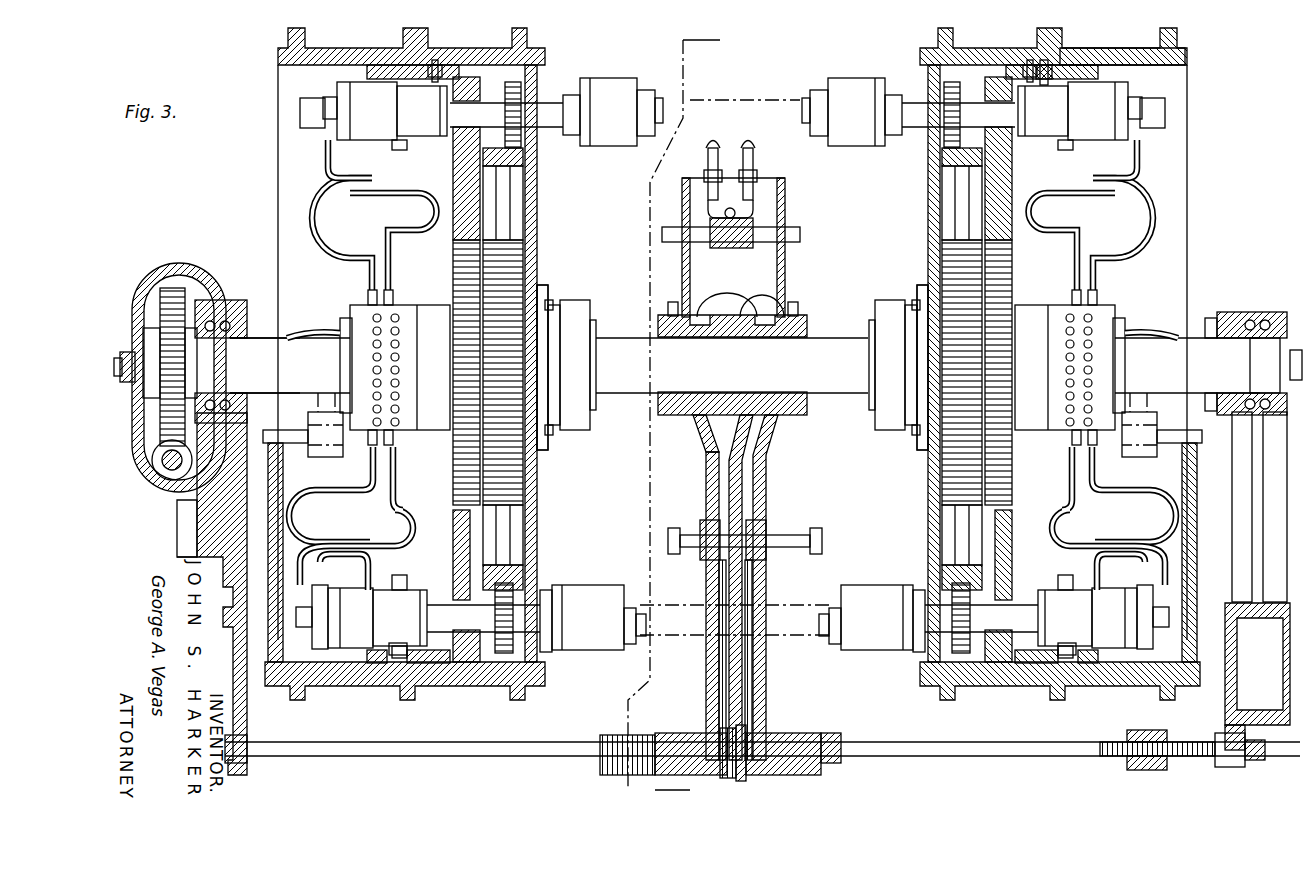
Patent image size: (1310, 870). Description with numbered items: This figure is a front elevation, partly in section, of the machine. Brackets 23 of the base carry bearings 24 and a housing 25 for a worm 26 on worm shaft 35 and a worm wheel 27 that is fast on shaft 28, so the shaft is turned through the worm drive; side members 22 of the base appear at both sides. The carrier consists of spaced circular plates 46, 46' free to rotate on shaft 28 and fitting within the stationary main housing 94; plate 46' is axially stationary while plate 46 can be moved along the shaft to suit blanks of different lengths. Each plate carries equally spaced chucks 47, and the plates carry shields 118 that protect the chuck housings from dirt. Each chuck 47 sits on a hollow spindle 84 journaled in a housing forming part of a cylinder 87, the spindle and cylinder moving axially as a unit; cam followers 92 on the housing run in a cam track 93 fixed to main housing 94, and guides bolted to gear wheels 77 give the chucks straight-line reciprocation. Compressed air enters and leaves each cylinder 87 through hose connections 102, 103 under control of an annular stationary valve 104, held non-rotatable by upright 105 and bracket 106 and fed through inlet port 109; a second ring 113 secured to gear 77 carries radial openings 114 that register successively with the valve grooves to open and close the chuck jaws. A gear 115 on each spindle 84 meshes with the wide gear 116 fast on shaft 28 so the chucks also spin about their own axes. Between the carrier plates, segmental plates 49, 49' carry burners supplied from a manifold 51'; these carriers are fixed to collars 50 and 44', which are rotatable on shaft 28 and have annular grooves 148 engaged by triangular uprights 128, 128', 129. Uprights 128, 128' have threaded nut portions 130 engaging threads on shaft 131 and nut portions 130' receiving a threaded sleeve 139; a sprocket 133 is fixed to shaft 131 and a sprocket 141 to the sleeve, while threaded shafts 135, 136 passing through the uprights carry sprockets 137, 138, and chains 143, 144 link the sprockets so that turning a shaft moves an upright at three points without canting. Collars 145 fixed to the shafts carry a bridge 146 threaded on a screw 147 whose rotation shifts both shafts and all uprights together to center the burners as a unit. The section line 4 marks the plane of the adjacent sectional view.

The section line 4- 4 is at (668, 415).
The side member 22 is at (250, 702).
The bracket 23 is at (180, 548).
The bearing 24 is at (216, 312).
The housing 25 is at (192, 275).
The worm 26 is at (168, 480).
The worm wheel 27 is at (165, 290).
The shaft 28 is at (262, 345).
The worm shaft 35 is at (178, 528).
The collar 44' is at (686, 433).
The circular plate 46 is at (904, 391).
The circular plate 46' is at (561, 404).
The chuck 47 is at (612, 148).
The segmental plate 49 is at (709, 247).
The segmental plate 49' is at (745, 247).
The collar 50 is at (658, 326).
The manifold 51' is at (750, 195).
The gear wheel 77 is at (470, 660).
The hollow spindle 84 is at (558, 128).
The cylinder 87 is at (346, 97).
The cam follower 92 is at (1040, 62).
The cam track 93 is at (1125, 48).
The main housing 94 is at (1108, 682).
The hose connection 102 is at (312, 202).
The hose connection 103 is at (432, 232).
The annular stationary valve 104 is at (347, 357).
The upright 105 is at (280, 488).
The bracket 106 is at (322, 410).
The inlet port 109 is at (305, 335).
The second ring 113 is at (358, 306).
The radial opening 114 is at (1075, 340).
The gear 115 is at (537, 75).
The gear 116 is at (515, 212).
The shield 118 is at (580, 85).
The triangular upright 128 is at (686, 606).
The triangular upright 128' is at (783, 587).
The triangular upright 129 is at (729, 487).
The threaded nut portion 130 is at (691, 773).
The threaded nut portion 130' is at (801, 768).
The shaft 131 is at (560, 760).
The sprocket 133 is at (728, 780).
The threaded shaft 135 is at (682, 552).
The threaded shaft 136 is at (800, 552).
The sprocket 137 is at (708, 522).
The sprocket 138 is at (760, 522).
The threaded sleeve 139 is at (830, 736).
The sprocket 141 is at (746, 778).
The chain 143 is at (718, 668).
The chain 144 is at (755, 668).
The collar 145 is at (1148, 732).
The bridge 146 is at (1148, 770).
The screw 147 is at (1205, 768).
The annular groove 148 is at (736, 310).